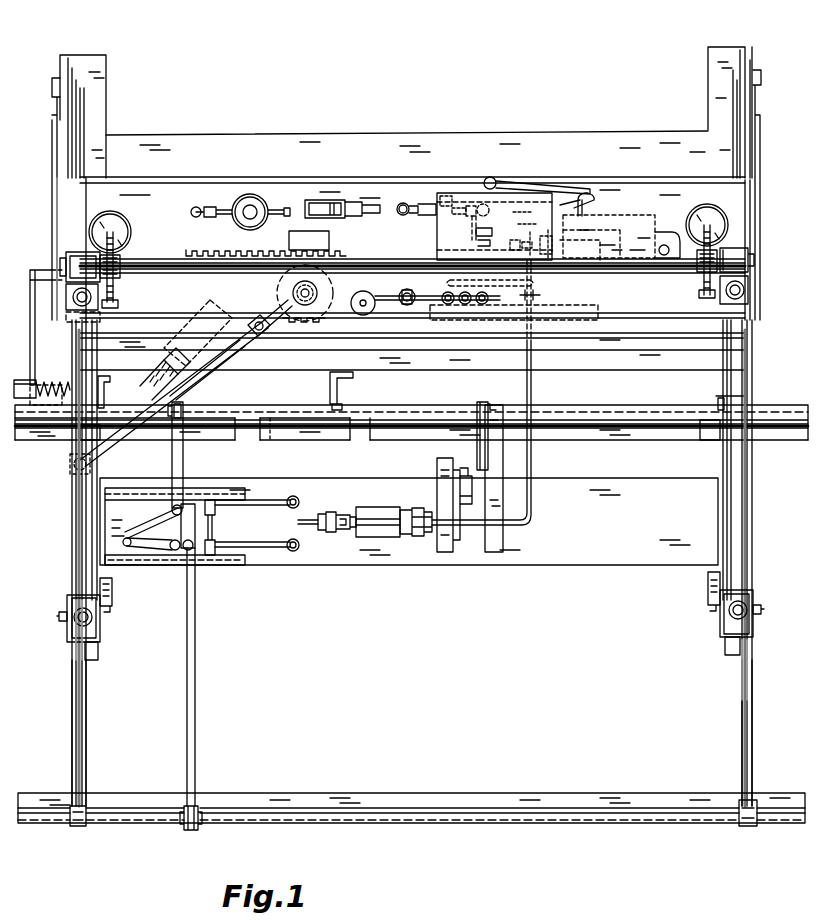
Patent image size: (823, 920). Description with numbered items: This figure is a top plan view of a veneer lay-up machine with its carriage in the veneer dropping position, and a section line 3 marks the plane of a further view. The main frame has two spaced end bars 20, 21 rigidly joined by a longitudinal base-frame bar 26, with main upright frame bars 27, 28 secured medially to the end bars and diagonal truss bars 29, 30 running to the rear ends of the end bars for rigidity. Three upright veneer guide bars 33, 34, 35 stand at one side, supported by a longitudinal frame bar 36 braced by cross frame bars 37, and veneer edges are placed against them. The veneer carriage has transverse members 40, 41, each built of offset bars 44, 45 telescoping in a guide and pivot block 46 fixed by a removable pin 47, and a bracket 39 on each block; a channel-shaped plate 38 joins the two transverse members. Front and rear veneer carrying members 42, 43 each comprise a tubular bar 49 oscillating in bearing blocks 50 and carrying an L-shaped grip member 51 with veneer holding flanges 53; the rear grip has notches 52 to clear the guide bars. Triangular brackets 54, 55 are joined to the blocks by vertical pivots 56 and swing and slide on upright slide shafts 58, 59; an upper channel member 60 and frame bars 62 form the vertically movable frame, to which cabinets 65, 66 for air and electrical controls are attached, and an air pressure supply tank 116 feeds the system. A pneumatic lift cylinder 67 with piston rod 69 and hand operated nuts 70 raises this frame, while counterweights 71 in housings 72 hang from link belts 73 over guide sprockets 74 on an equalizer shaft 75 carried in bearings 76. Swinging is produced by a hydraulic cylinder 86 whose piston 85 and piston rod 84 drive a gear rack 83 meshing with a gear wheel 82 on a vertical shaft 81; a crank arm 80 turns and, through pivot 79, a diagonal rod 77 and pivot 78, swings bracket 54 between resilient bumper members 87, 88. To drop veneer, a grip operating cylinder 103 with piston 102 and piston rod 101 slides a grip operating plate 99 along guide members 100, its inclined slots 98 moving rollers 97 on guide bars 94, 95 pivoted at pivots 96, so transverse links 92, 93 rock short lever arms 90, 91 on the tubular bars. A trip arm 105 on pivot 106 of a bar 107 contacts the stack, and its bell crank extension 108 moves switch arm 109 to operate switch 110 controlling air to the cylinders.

The section line 3- 3 is at (778, 130).
The end bar 20 is at (92, 58).
The end bar 21 is at (718, 52).
The base-frame bar 26 is at (610, 136).
The upright frame bar 27 is at (58, 232).
The upright frame bar 28 is at (752, 236).
The diagonal truss bar 29 is at (82, 102).
The diagonal truss bar 30 is at (732, 106).
The upright veneer guide bar 33 is at (103, 408).
The upright veneer guide bar 34 is at (340, 402).
The upright veneer guide bar 35 is at (716, 386).
The longitudinal frame bar 36 is at (616, 370).
The cross frame bar 37 is at (58, 162).
The plate 38 is at (628, 484).
The bracket 39 is at (112, 593).
The transverse carriage member 40 is at (60, 645).
The transverse carriage member 41 is at (758, 635).
The front veneer carrying carriage member 42 is at (454, 832).
The rear veneer carrying carriage member 43 is at (422, 444).
The outermost bar 44 is at (82, 762).
The bar 45 is at (98, 652).
The guide and pivot block 46 is at (101, 633).
The removable pin 47 is at (60, 614).
The tubular bar 49 is at (398, 808).
The bearing block 50 is at (80, 828).
The grip member 51 is at (543, 410).
The notch 52 is at (96, 436).
The veneer holding flange 53 is at (610, 440).
The triangular bracket 54 is at (76, 528).
The triangular bracket 55 is at (744, 508).
The vertical pivot 56 is at (94, 615).
The upright slide shaft 58 is at (64, 266).
The upright slide shaft 59 is at (746, 290).
The upper horizontal channel member 60 is at (612, 320).
The frame bar 62 is at (633, 323).
The cabinet 65 is at (516, 214).
The cabinet 66 is at (626, 216).
The pneumatic lift cylinder 67 is at (430, 312).
The piston rod 69 is at (402, 294).
The hand operated nut 70 is at (398, 304).
The counterweight 71 is at (108, 212).
The housing 72 is at (130, 230).
The link belt 73 is at (112, 250).
The guide sprocket 74 is at (118, 266).
The equalizer shaft 75 is at (192, 270).
The bearing 76 is at (748, 258).
The diagonal rod 77 is at (200, 372).
The pivot 78 is at (74, 472).
The pivot 79 is at (256, 336).
The crank arm 80 is at (276, 328).
The vertical shaft 81 is at (284, 296).
The gear wheel 82 is at (318, 322).
The gear rack 83 is at (238, 254).
The piston rod 84 is at (362, 240).
The piston 85 is at (544, 244).
The hydraulic cylinder 86 is at (596, 232).
The resilient bumper member 87 is at (64, 380).
The resilient bumper member 88 is at (146, 352).
The short lever arm 90 is at (192, 832).
The short lever arm 91 is at (172, 386).
The transverse link 92 is at (196, 742).
The transverse link 93 is at (182, 450).
The guide bar 94 is at (248, 556).
The guide bar 95 is at (220, 500).
The pivot 96 is at (300, 503).
The roller 97 is at (176, 538).
The inclined slot 98 is at (150, 544).
The grip operating plate 99 is at (126, 498).
The guide member 100 is at (246, 504).
The piston rod 101 is at (278, 500).
The piston 102 is at (352, 514).
The grip operating cylinder 103 is at (400, 514).
The trip arm 105 is at (490, 402).
The pivot 106 is at (477, 402).
The bar 107 is at (505, 455).
The bell crank extension 108 is at (478, 424).
The switch arm 109 is at (466, 468).
The switch 110 is at (470, 497).
The air pressure supply tank 116 is at (624, 180).